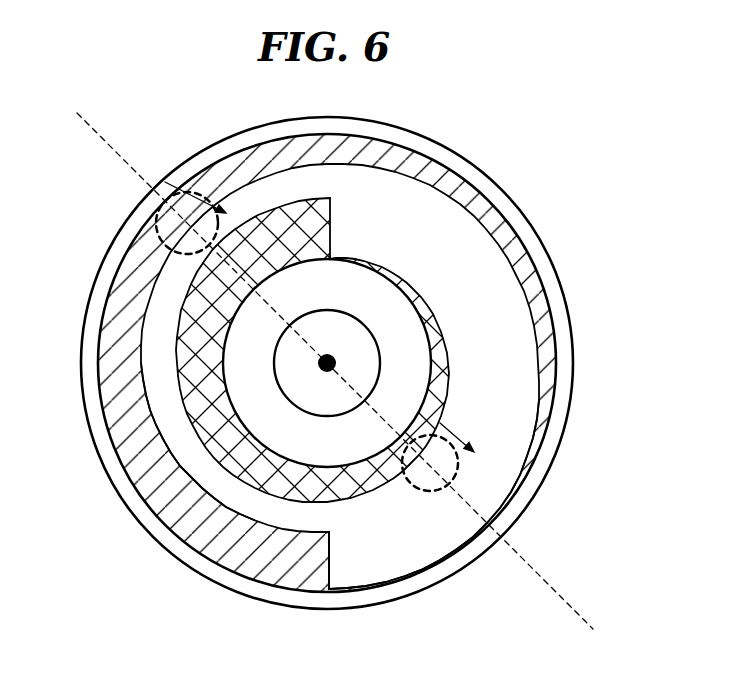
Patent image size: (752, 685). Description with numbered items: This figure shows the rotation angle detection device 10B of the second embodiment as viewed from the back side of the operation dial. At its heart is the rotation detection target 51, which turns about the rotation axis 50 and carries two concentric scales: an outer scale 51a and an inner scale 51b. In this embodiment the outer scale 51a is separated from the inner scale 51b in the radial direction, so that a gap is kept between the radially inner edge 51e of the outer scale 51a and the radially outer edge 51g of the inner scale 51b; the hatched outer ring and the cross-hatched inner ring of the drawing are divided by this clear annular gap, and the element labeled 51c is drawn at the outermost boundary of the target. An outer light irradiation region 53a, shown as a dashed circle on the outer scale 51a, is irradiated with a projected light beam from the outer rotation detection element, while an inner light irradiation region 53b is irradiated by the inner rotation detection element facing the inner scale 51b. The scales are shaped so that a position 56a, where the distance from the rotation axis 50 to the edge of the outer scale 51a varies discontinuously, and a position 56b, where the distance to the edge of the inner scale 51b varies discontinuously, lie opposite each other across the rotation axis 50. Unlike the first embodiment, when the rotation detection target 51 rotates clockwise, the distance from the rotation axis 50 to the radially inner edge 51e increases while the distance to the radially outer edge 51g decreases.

The rotation angle detection device 10B is at (578, 151).
The rotation axis 50 is at (336, 361).
The rotation detection target 51 is at (455, 157).
The outer scale 51a is at (318, 569).
The inner scale 51b is at (353, 477).
The outer surface 51c is at (217, 577).
The radially inner edge of the outer scale 51e is at (208, 490).
The radially outer edge of the inner scale 51g is at (195, 435).
The outer light irradiation region 53a is at (157, 220).
The inner light irradiation region 53b is at (457, 464).
The position of discontinuous variation of outer scale 56a is at (343, 565).
The position of discontinuous variation of inner scale 56b is at (331, 218).